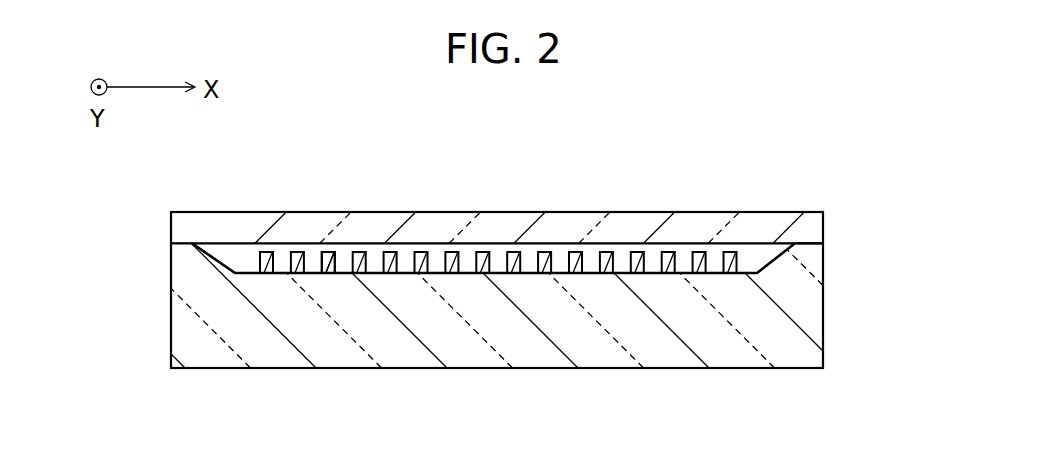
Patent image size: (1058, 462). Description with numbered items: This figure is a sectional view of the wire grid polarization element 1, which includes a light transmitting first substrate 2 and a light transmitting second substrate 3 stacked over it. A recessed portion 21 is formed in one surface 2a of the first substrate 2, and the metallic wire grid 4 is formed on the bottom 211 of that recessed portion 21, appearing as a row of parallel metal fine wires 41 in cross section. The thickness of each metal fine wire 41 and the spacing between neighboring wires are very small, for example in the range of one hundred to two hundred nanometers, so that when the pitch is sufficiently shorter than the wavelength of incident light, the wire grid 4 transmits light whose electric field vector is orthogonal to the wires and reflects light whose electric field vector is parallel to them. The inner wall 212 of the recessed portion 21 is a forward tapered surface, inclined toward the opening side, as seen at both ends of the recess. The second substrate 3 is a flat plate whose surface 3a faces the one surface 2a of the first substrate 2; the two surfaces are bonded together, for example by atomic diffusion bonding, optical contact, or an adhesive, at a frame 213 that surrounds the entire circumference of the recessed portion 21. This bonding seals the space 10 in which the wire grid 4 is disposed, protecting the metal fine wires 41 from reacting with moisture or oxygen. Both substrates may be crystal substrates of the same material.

The wire grid polarization element 1 is at (810, 205).
The first substrate 2 is at (655, 325).
The one surface of the first substrate 2a is at (810, 243).
The second substrate 3 is at (497, 228).
The surface of the second substrate 3a is at (803, 244).
The space 10 is at (238, 253).
The recessed portion 21 is at (431, 273).
The bottom of the recessed portion 211 is at (528, 273).
The inner wall of the recessed portion 212 is at (217, 262).
The frame 213 is at (192, 244).
The wire grid 4 is at (354, 274).
The metal fine wire 41 is at (323, 274).